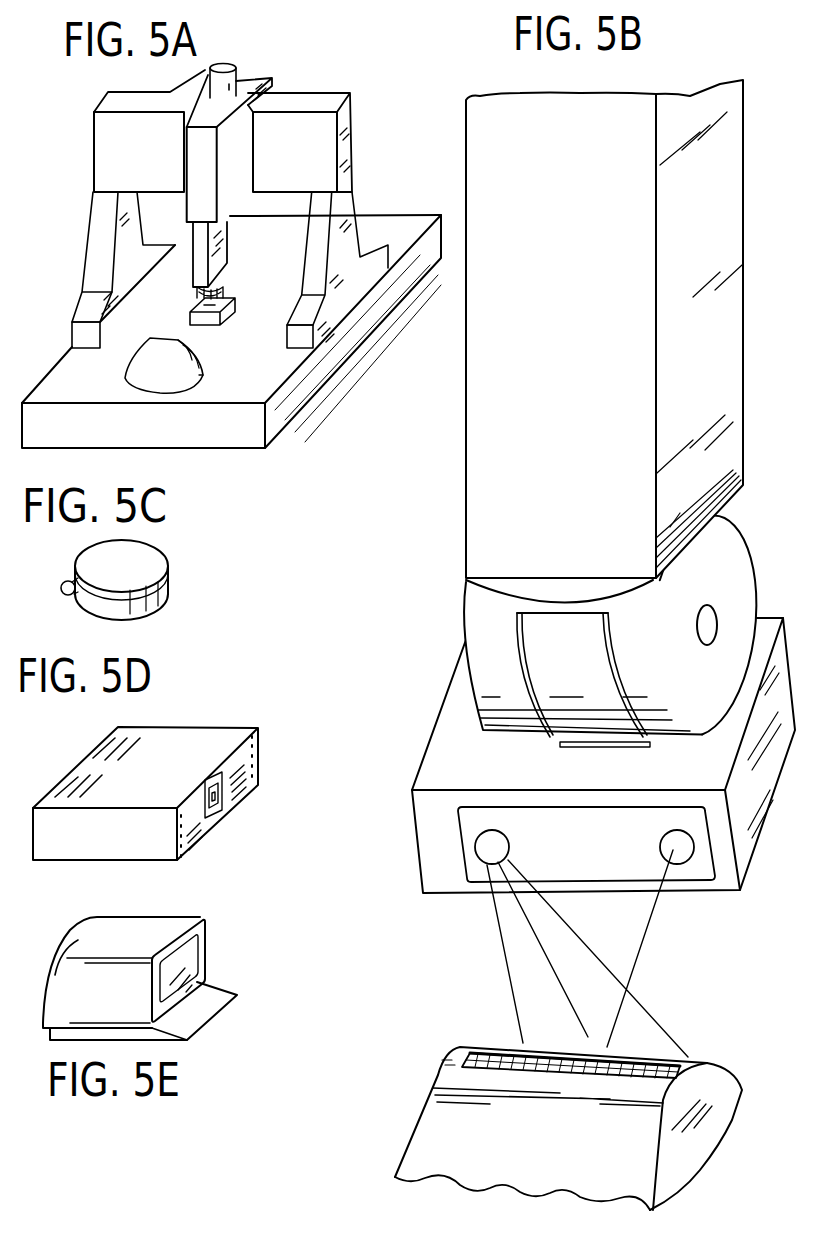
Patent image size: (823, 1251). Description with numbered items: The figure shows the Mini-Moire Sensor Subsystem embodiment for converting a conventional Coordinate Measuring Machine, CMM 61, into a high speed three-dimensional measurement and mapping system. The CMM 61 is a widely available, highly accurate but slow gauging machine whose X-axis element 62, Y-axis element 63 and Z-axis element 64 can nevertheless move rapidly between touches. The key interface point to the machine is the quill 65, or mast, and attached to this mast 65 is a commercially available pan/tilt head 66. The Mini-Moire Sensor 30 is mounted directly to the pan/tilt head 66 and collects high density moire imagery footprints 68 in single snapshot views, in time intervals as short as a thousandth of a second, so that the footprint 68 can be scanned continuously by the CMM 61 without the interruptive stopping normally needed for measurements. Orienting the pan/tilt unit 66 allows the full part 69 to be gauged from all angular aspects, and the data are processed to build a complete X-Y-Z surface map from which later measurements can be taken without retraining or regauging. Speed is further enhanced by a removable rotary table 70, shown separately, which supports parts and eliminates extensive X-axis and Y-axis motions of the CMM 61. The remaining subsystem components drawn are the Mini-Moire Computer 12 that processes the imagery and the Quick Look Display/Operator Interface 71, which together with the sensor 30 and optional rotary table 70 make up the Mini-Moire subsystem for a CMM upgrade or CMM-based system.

In FIG. 5A, the Coordinate Measuring Machine (CMM) 61 is at (220, 448).
In FIG. 5A, the X-axis element 62 is at (230, 270).
In FIG. 5A, the Y-axis element 63 is at (94, 148).
In FIG. 5A, the Z-axis element 64 is at (202, 145).
In FIG. 5A, the quill 65 is at (223, 265).
In FIG. 5B, the quill 65 is at (490, 368).
In FIG. 5B, the pan/tilt head 66 is at (488, 615).
In FIG. 5B, the Mini-Moire Sensor 30 is at (422, 855).
In FIG. 5B, the imagery footprint 68 is at (495, 1053).
In FIG. 5B, the part 69 is at (447, 1060).
In FIG. 5C, the removable rotary table 70 is at (167, 582).
In FIG. 5D, the Mini-Moire Computer 12 is at (258, 752).
In FIG. 5E, the Quick Look Display/Operator Interface 71 is at (202, 942).